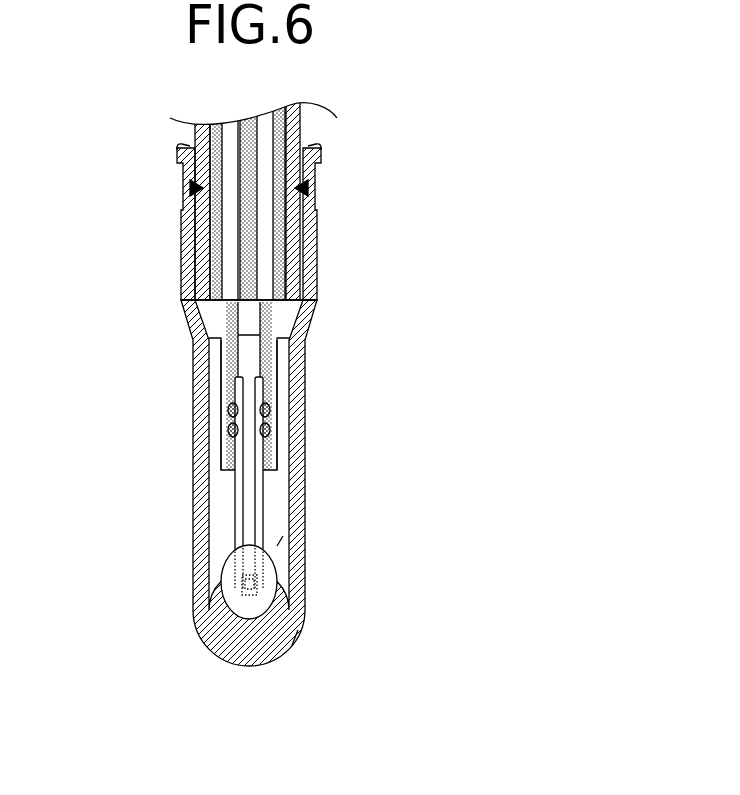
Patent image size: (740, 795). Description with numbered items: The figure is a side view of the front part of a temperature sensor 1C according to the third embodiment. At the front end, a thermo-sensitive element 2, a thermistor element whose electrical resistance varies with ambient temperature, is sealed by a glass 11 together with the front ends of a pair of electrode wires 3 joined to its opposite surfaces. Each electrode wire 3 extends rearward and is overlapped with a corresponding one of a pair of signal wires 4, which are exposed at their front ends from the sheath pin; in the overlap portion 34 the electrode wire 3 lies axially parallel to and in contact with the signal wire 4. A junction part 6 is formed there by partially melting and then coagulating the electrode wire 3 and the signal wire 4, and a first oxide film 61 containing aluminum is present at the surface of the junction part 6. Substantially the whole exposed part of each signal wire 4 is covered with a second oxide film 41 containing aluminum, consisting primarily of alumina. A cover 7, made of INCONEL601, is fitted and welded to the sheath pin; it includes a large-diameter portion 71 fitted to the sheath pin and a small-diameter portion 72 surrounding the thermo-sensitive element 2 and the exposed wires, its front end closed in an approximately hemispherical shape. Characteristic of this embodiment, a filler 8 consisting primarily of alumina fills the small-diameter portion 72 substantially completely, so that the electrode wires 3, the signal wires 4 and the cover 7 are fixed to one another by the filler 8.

The temperature sensor 1C is at (398, 122).
The thermo-sensitive element 2 is at (257, 591).
The electrode wires 3 is at (235, 518).
The signal wires 4 is at (235, 218).
The junction part 6 is at (227, 416).
The cover 7 is at (298, 637).
The filler 8 is at (280, 542).
The glass 11 is at (252, 608).
The overlap portion 34 is at (222, 403).
The second oxide film 41 is at (233, 318).
The first oxide film 61 is at (229, 435).
The large-diameter portion 71 is at (313, 250).
The small-diameter portion 72 is at (195, 557).